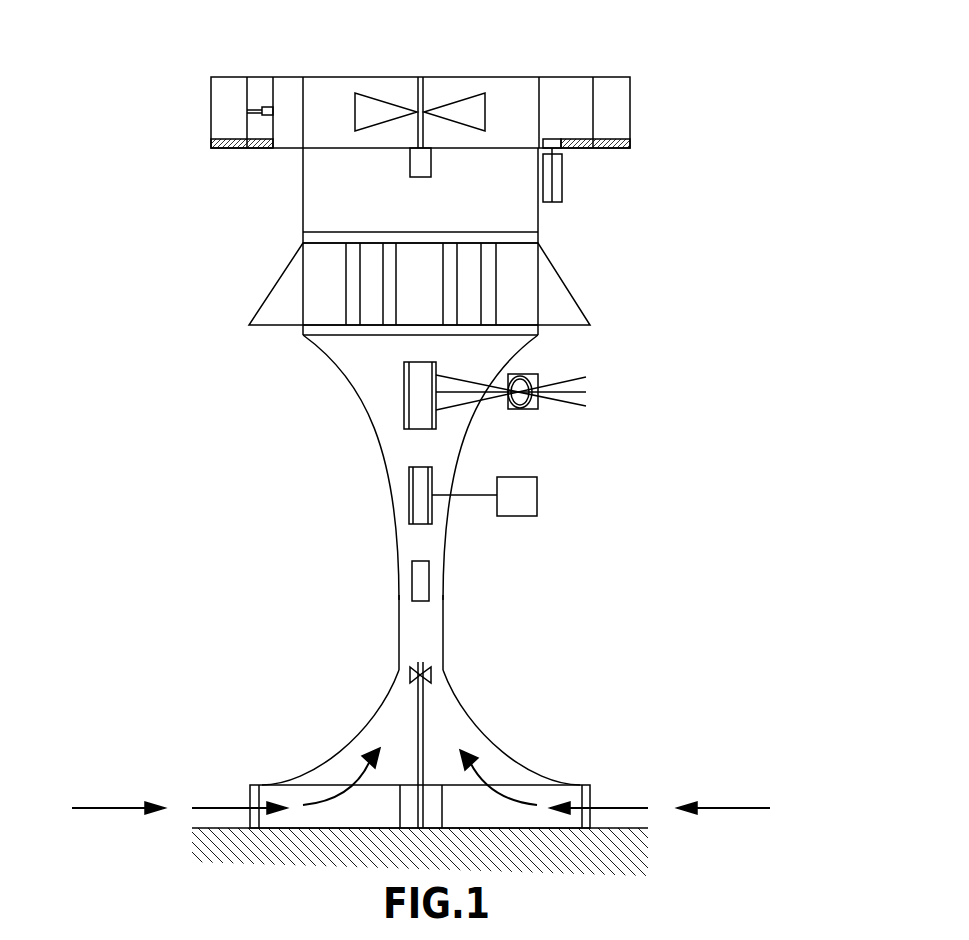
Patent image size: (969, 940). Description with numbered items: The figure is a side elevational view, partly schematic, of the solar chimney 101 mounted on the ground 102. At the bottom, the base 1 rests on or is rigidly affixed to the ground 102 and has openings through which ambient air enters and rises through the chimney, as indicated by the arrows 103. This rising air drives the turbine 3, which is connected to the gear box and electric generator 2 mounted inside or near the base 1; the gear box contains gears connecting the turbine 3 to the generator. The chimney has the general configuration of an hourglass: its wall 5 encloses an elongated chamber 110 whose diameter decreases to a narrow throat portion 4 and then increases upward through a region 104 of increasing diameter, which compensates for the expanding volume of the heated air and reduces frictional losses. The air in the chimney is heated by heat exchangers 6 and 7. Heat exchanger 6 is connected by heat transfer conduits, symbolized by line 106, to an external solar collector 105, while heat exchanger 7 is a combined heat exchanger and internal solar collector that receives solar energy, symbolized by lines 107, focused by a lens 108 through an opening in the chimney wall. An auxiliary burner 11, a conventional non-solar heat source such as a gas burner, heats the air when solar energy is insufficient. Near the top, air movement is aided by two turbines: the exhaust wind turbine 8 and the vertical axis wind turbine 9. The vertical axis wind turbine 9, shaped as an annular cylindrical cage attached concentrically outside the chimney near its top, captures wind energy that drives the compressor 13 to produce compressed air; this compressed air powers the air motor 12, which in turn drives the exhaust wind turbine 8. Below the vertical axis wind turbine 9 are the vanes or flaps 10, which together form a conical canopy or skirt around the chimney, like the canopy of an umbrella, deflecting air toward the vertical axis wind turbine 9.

The base 1 is at (590, 797).
The gear box and electric generator 2 is at (410, 807).
The turbine 3 is at (434, 675).
The throat portion 4 is at (408, 632).
The wall 5 is at (321, 348).
The heat exchanger 6 is at (416, 495).
The heat exchanger 7 is at (416, 401).
The exhaust wind turbine 8 is at (472, 112).
The vertical axis wind turbine 9 is at (613, 110).
The vanes or flaps 10 is at (273, 285).
The auxiliary burner 11 is at (420, 580).
The air motor 12 is at (431, 165).
The compressor 13 is at (563, 188).
The solar chimney 101 is at (566, 578).
The ground 102 is at (625, 855).
The arrows 103 is at (102, 808).
The region of increasing diameter 104 is at (453, 436).
The external solar collector 105 is at (537, 491).
The line 106 is at (463, 496).
The lines 107 is at (573, 383).
The lens 108 is at (527, 415).
The elongated chamber 110 is at (443, 610).